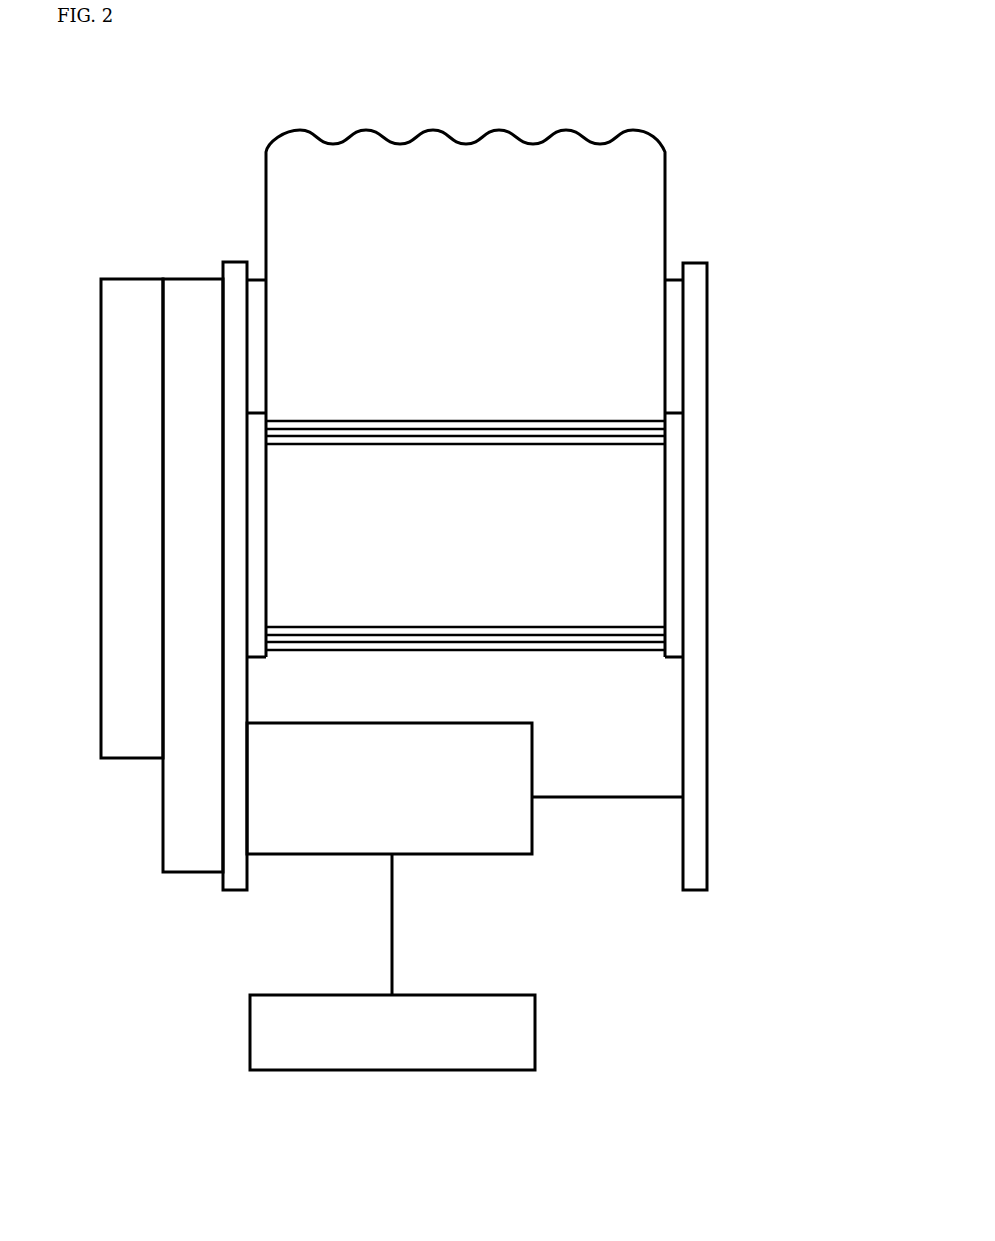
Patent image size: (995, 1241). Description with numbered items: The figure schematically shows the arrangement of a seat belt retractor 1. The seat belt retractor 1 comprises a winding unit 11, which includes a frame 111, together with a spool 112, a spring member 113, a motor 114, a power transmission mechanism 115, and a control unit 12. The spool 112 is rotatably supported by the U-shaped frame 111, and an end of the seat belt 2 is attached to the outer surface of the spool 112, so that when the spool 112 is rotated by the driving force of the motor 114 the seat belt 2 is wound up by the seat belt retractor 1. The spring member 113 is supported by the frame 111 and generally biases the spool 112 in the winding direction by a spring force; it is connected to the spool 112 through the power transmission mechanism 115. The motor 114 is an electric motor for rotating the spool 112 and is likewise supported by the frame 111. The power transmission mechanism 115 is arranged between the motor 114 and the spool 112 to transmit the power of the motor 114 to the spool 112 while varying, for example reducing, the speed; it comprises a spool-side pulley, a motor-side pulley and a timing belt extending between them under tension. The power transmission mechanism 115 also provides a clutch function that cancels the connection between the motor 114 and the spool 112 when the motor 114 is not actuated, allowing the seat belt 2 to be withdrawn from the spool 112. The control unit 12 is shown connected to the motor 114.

The seat belt retractor 1 is at (128, 133).
The seat belt 2 is at (493, 146).
The winding unit 11 is at (771, 236).
The frame 111 is at (675, 287).
The spool 112 is at (620, 541).
The spring member 113 is at (128, 752).
The motor 114 is at (342, 855).
The power transmission mechanism 115 is at (190, 866).
The control unit 12 is at (524, 1040).